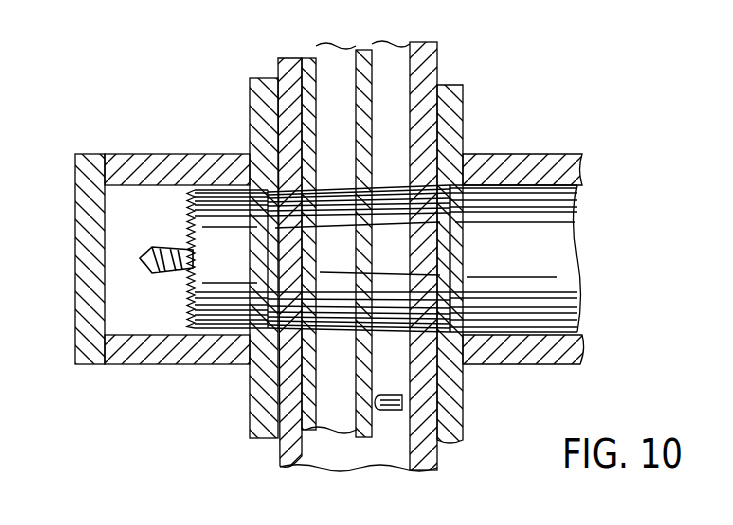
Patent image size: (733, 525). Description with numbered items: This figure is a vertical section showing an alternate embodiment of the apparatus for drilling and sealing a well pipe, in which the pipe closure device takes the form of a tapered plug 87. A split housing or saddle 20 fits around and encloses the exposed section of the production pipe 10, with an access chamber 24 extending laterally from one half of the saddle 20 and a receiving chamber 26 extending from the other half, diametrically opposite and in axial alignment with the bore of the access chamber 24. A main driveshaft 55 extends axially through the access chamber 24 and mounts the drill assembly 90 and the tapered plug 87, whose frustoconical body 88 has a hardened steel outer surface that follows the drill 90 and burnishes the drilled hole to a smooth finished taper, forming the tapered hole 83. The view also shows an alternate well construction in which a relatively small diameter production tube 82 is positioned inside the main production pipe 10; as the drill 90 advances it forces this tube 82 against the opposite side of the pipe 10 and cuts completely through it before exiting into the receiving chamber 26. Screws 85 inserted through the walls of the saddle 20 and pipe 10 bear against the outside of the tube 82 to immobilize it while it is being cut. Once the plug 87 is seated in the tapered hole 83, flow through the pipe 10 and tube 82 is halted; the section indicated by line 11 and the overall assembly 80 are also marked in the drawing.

The production pipe 10 is at (438, 66).
The saddle 20 is at (465, 125).
The access chamber 24 is at (526, 366).
The receiving chamber 26 is at (163, 153).
The main driveshaft 55 is at (557, 232).
The connector assembly 80 is at (667, 2).
The production tube 82 is at (378, 54).
The tapered hole 83 is at (290, 330).
The screws 85 is at (388, 411).
The tapered plug 87 is at (392, 185).
The frustoconical body 88 is at (437, 258).
The drill assembly 90 is at (230, 218).
The section line 11- 11 is at (135, 258).